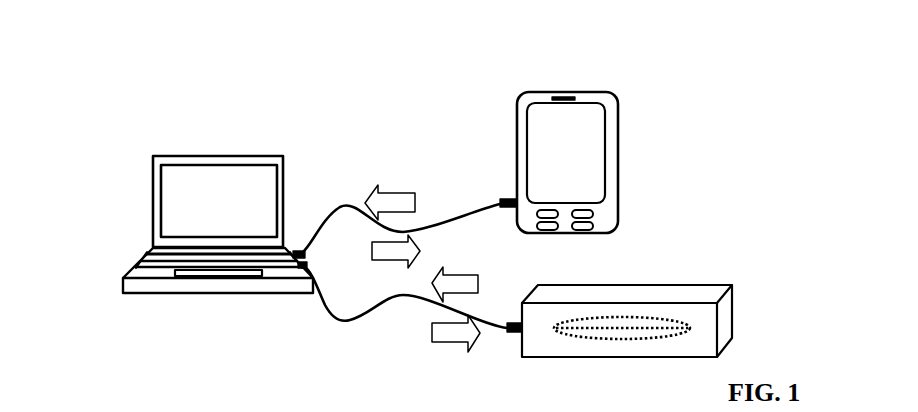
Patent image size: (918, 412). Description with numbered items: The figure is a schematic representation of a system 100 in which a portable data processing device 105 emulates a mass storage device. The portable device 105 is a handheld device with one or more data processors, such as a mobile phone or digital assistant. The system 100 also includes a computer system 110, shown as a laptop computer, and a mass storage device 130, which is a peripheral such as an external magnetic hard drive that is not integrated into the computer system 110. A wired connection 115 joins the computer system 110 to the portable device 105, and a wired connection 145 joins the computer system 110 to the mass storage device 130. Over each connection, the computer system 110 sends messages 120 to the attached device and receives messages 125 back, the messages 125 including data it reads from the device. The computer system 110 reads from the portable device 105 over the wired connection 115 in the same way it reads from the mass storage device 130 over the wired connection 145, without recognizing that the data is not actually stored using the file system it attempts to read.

The system 100 is at (338, 95).
The portable data processing device 105 is at (598, 95).
The computer system 110 is at (255, 169).
The wired connection 115 is at (338, 205).
The messages 120 is at (372, 253).
The messages 125 is at (390, 197).
The mass storage device 130 is at (657, 293).
The wired connection 145 is at (341, 323).